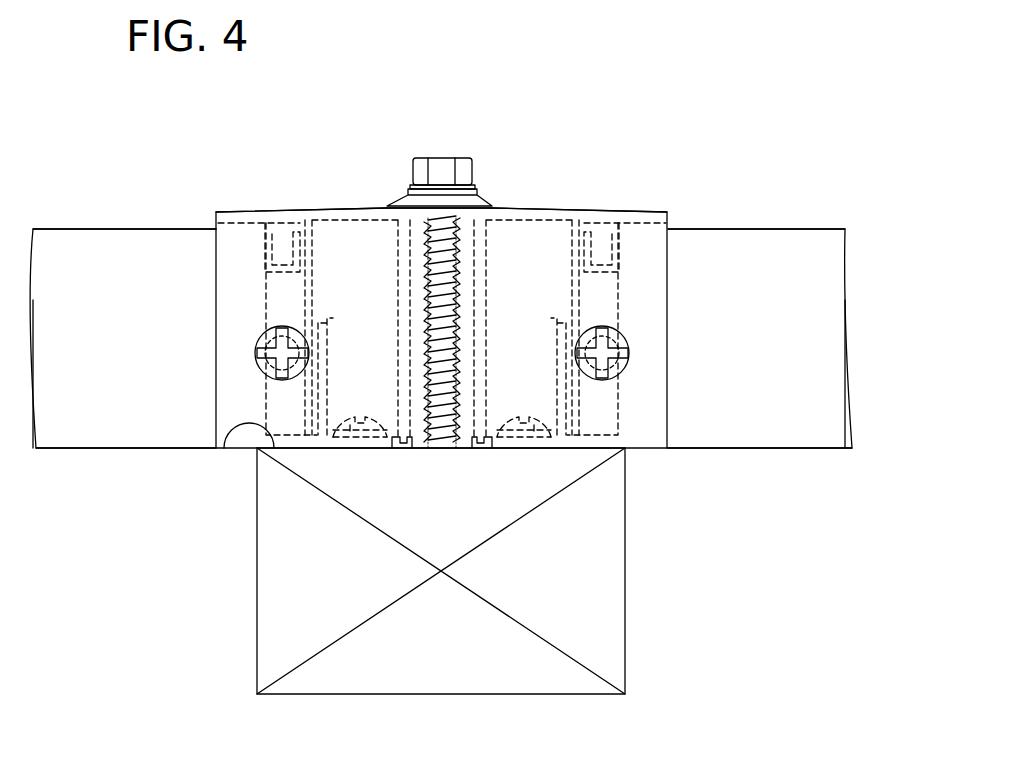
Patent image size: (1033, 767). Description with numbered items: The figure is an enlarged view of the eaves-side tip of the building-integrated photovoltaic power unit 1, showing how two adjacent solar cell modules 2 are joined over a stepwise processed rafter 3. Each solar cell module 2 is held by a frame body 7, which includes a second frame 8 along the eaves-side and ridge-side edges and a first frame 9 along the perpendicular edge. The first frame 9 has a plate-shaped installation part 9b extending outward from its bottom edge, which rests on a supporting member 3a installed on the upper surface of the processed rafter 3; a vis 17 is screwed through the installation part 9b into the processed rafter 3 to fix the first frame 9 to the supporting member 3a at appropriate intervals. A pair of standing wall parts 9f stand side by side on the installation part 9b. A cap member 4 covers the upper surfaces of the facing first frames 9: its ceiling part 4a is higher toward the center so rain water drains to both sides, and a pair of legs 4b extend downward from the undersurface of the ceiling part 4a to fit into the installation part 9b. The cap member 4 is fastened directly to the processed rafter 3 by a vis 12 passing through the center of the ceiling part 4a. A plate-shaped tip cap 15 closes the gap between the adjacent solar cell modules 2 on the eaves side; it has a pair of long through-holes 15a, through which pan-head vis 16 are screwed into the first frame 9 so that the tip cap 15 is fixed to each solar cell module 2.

The building-integrated photovoltaic power unit 1 is at (684, 134).
The solar cell module 2 is at (56, 208).
The processed rafter 3 is at (628, 643).
The supporting member 3a is at (232, 448).
The cap member 4 is at (520, 205).
The ceiling part 4a is at (352, 207).
The leg 4b is at (397, 390).
The frame body 7 is at (97, 228).
The second frame 8 is at (138, 257).
The first frame 9 is at (556, 321).
The installation part 9b is at (378, 448).
The standing wall part 9f is at (327, 321).
The vis 12 is at (448, 157).
The tip cap 15 is at (645, 277).
The through-hole 15a is at (258, 352).
The pan-head vis 16 is at (268, 370).
The vis 17 is at (511, 417).